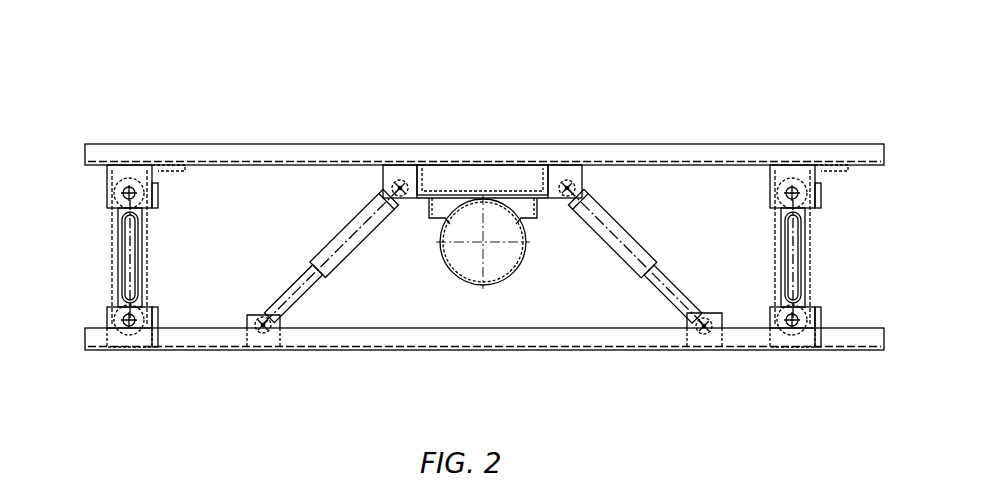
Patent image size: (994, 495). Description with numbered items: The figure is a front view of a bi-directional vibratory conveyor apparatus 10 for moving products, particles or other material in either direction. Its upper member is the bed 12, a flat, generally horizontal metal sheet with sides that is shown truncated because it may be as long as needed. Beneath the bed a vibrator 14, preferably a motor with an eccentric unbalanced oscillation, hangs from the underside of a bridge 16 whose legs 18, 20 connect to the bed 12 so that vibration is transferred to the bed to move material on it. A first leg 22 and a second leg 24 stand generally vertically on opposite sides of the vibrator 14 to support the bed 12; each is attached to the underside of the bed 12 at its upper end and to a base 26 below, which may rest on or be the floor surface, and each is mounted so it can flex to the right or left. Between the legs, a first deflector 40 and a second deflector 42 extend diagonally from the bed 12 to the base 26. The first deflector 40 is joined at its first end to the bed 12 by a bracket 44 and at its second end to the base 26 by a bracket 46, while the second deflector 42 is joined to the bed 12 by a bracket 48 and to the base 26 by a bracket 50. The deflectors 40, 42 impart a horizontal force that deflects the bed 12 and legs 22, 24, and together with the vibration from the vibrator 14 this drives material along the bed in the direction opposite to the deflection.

The bi-directional vibratory conveyor apparatus 10 is at (120, 70).
The bed 12 is at (223, 150).
The vibrator 14 is at (448, 255).
The bridge 16 is at (528, 195).
The leg of the bridge 18 is at (566, 175).
The leg of the bridge 20 is at (417, 175).
The first leg 22 is at (806, 244).
The second leg 24 is at (118, 243).
The base 26 is at (170, 340).
The first deflector 40 is at (637, 245).
The second deflector 42 is at (342, 225).
The bracket 44 is at (528, 197).
The bracket 46 is at (693, 327).
The bracket 48 is at (395, 168).
The bracket 50 is at (273, 327).